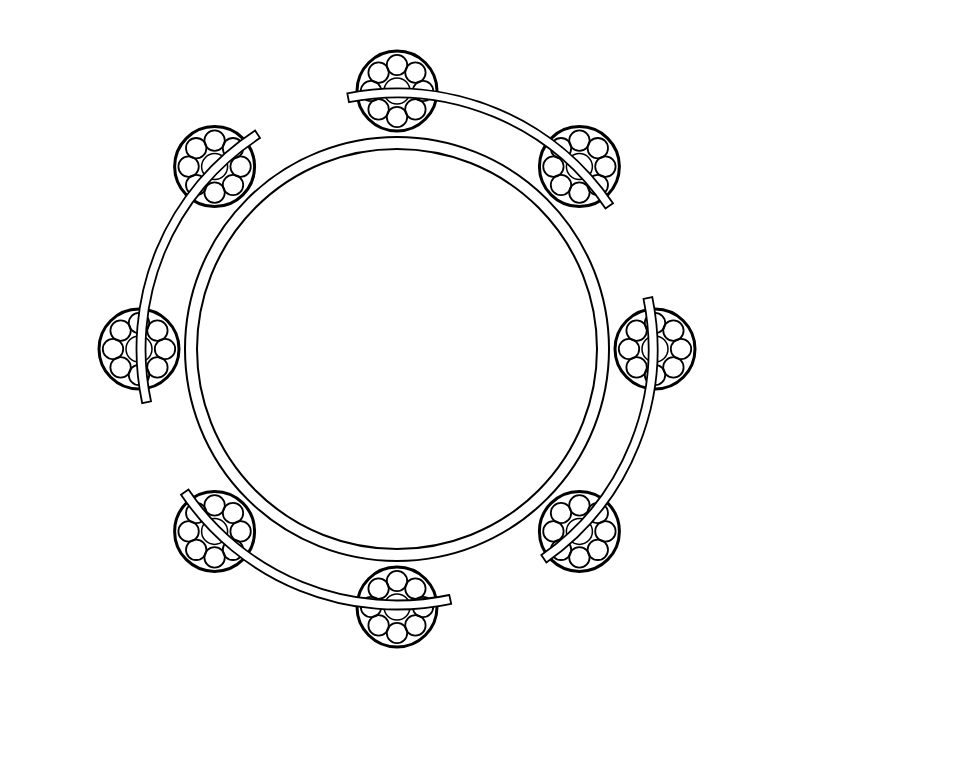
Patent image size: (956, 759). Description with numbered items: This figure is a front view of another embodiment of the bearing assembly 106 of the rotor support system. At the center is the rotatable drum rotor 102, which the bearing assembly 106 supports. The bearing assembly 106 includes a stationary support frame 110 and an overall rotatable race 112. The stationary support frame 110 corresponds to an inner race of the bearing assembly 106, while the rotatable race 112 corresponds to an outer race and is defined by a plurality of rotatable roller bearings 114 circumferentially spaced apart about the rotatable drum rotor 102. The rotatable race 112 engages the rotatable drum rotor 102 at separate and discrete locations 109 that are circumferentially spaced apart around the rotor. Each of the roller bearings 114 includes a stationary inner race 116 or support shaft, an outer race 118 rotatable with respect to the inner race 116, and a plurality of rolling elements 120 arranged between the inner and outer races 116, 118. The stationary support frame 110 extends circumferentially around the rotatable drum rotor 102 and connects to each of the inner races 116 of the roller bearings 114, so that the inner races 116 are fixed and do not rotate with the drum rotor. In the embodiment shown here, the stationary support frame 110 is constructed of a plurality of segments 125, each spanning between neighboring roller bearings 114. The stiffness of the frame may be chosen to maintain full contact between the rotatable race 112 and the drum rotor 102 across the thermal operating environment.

The rotatable drum rotor 102 is at (412, 353).
The bearing assembly 106 is at (105, 175).
The discrete locations 109 is at (221, 206).
The stationary support frame 110 is at (513, 113).
The rotatable race 112 is at (346, 67).
The rotatable roller bearings 114 is at (376, 38).
The stationary inner race 116 is at (378, 337).
The outer race 118 is at (192, 557).
The rolling elements 120 is at (214, 583).
The segments 125 is at (397, 359).